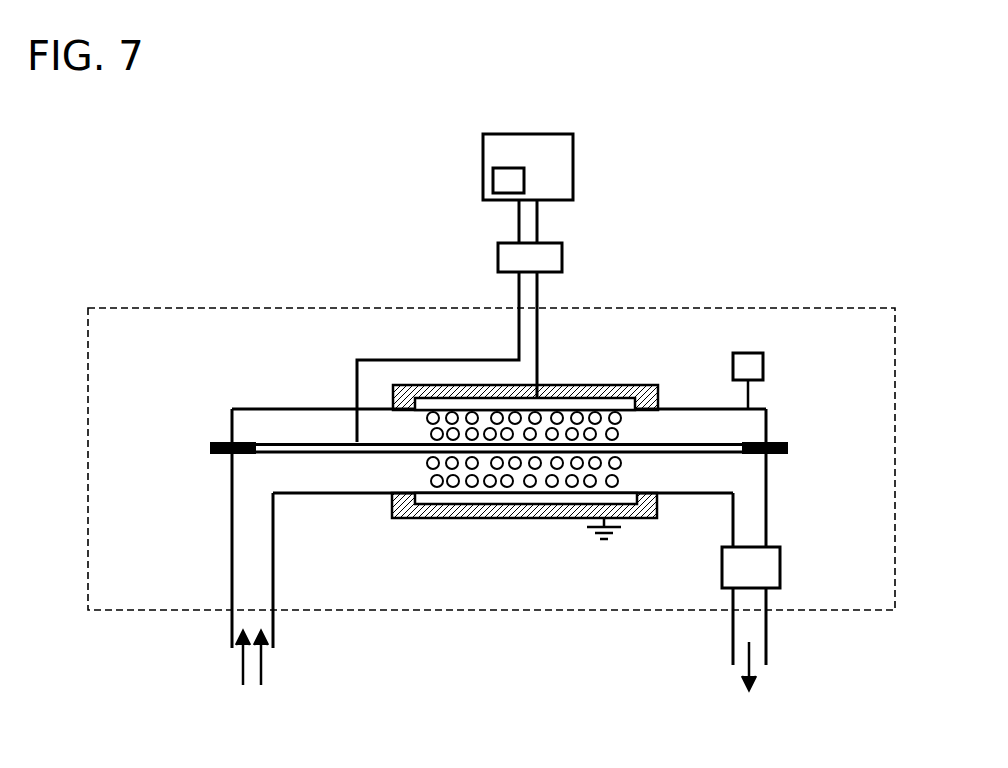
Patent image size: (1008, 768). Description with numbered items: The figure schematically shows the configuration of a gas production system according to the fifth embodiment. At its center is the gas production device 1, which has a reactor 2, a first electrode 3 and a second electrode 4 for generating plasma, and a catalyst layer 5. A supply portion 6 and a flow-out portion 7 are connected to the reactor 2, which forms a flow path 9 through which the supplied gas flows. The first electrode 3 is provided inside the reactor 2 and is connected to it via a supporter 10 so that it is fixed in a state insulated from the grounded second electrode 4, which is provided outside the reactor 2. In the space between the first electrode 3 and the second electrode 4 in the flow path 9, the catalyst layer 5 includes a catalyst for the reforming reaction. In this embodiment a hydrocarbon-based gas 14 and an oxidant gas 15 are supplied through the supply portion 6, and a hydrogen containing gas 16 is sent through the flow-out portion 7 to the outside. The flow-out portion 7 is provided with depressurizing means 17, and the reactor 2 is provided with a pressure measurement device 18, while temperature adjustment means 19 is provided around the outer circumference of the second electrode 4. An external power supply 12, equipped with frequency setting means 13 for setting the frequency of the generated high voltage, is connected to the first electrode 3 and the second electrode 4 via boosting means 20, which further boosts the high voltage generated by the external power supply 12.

The gas production device 1 is at (228, 308).
The reactor 2 is at (661, 497).
The first electrode 3 is at (302, 443).
The second electrode 4 is at (663, 387).
The catalyst layer 5 is at (507, 495).
The supply portion 6 is at (243, 545).
The flow-out portion 7 is at (752, 512).
The flow path 9 is at (337, 483).
The supporter 10 is at (210, 447).
The external power supply 12 is at (573, 167).
The frequency setting means 13 is at (493, 180).
The hydrocarbon-based gas 14 is at (241, 668).
The oxidant gas 15 is at (263, 668).
The hydrogen containing gas 16 is at (752, 660).
The depressurizing means 17 is at (780, 572).
The pressure measurement device 18 is at (763, 365).
The temperature adjustment means 19 is at (625, 385).
The boosting means 20 is at (562, 253).